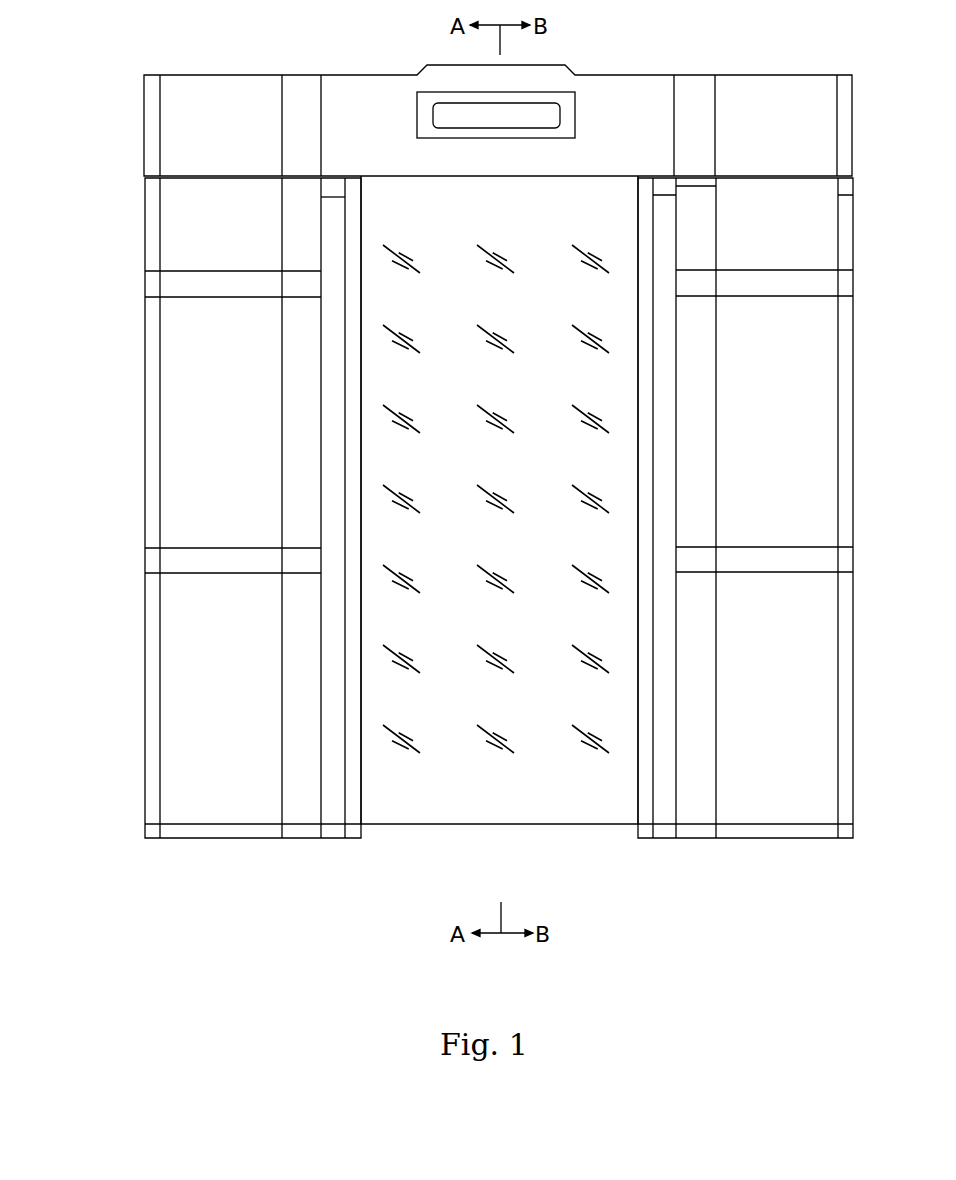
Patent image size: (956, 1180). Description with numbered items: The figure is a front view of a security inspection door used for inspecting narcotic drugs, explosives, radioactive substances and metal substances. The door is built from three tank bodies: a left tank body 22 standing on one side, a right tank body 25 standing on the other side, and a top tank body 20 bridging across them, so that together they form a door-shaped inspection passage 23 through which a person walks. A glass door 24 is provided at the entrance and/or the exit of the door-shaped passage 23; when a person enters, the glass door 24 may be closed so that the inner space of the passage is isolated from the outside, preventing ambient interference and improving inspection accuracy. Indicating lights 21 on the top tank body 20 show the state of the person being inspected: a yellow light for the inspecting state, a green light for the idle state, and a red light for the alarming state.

The top tank body 20 is at (193, 128).
The indicating lights 21 is at (502, 118).
The left tank body 22 is at (195, 802).
The door-shaped inspection passage 23 is at (480, 832).
The glass door 24 is at (501, 615).
The right tank body 25 is at (770, 798).